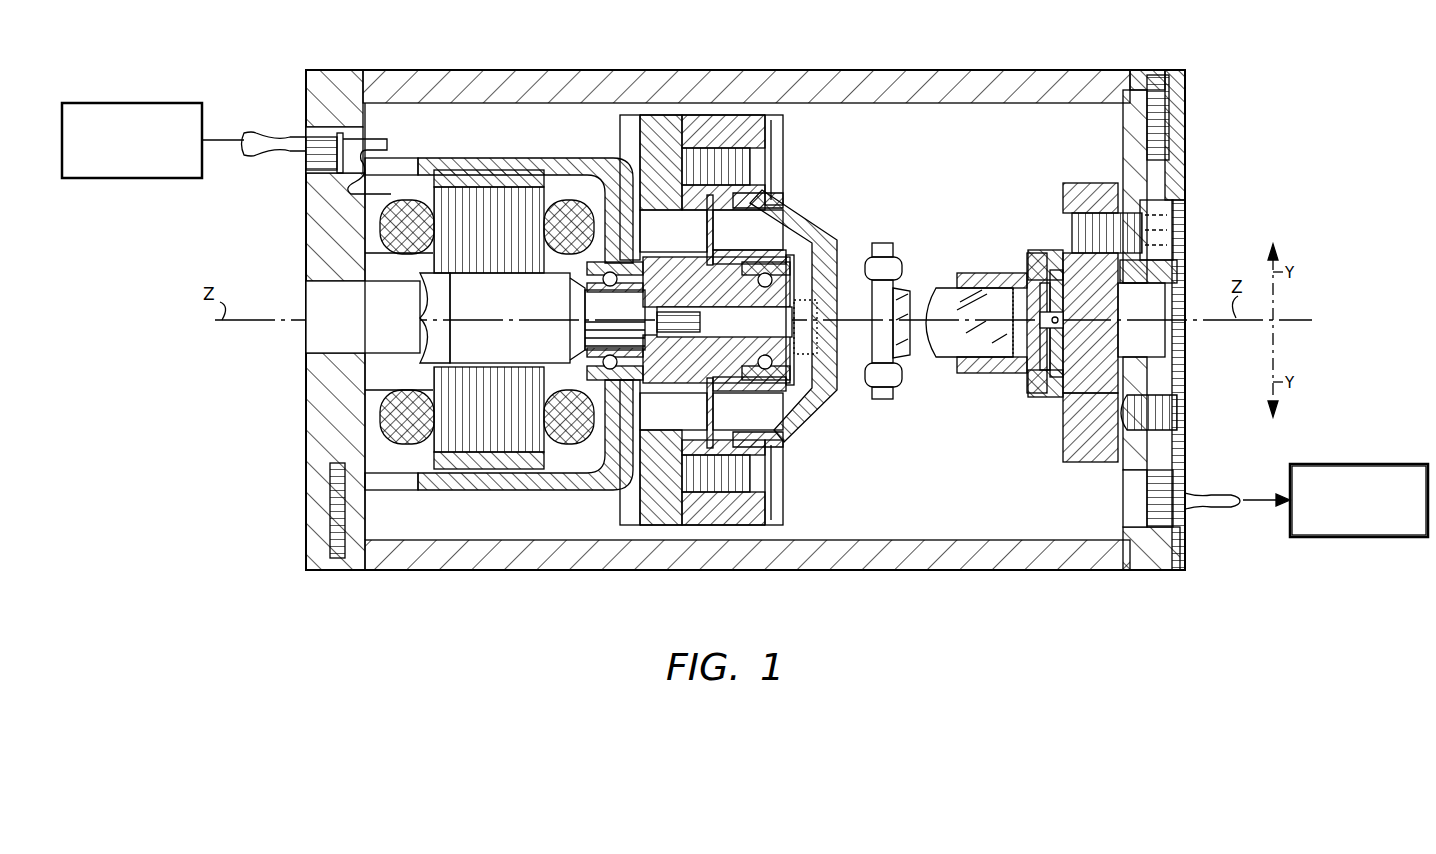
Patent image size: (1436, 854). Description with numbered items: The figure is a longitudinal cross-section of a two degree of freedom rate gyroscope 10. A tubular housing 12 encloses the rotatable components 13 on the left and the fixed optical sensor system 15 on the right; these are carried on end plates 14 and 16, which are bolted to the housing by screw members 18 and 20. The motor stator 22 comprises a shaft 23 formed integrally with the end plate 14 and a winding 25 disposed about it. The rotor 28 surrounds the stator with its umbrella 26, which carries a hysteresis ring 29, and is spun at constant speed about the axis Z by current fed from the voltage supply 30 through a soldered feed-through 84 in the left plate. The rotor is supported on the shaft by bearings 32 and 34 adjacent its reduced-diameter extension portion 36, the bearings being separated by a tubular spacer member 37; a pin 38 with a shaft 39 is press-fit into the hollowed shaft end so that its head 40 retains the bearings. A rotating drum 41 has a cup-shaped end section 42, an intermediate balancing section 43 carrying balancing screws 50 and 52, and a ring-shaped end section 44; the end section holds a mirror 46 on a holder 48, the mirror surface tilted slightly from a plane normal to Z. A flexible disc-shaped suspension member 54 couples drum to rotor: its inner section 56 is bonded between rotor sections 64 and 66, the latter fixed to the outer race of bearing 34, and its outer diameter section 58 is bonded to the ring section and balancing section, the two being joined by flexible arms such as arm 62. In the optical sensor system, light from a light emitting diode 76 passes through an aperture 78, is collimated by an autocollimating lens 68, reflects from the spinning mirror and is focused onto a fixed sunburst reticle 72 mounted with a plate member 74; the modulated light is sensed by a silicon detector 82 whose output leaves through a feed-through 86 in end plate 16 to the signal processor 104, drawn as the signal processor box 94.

The two degree of freedom rate gyroscope 10 is at (520, 597).
The tubular housing 12 is at (790, 75).
The rotatable components 13 is at (826, 429).
The end plate 14 is at (322, 247).
The optical sensor system 15 is at (1023, 249).
The end plate 16 is at (1182, 161).
The screw member 18 is at (1182, 119).
The screw member 20 is at (334, 508).
The stator 22 is at (513, 222).
The shaft 23 is at (521, 307).
The winding 25 is at (483, 425).
The umbrella 26 is at (435, 160).
The rotor 28 is at (568, 153).
The hysteresis ring 29 is at (515, 462).
The voltage supply 30 is at (130, 110).
The bearing 32 is at (612, 287).
The bearing 34 is at (724, 322).
The extension portion 36 is at (680, 372).
The spacer member 37 is at (664, 291).
The pin 38 is at (791, 368).
The shaft 39 is at (793, 299).
The head 40 is at (818, 322).
The rotating drum 41 is at (845, 197).
The cup-shaped end section 42 is at (848, 233).
The intermediate balancing section 43 is at (728, 190).
The ring-shaped end section 44 is at (648, 148).
The mirror 46 is at (906, 289).
The holder 48 is at (882, 245).
The screw 50 is at (758, 169).
The screw 52 is at (750, 471).
The suspension member 54 is at (767, 412).
The inner section 56 is at (707, 252).
The outer diameter section 58 is at (714, 214).
The flexible arm 62 is at (713, 242).
The section 64 is at (660, 224).
The section 66 is at (770, 262).
The autocollimating lens 68 is at (949, 348).
The sunburst reticle 72 is at (1000, 370).
The plate member 74 is at (1120, 345).
The light emitting diode 76 is at (1115, 319).
The aperture 78 is at (1045, 319).
The silicon detector 82 is at (1045, 389).
The soldered feed-through 84 is at (306, 135).
The soldered feed-through 86 is at (1204, 508).
The signal processor 94 is at (1359, 500).
The signal processor 104 is at (1410, 467).